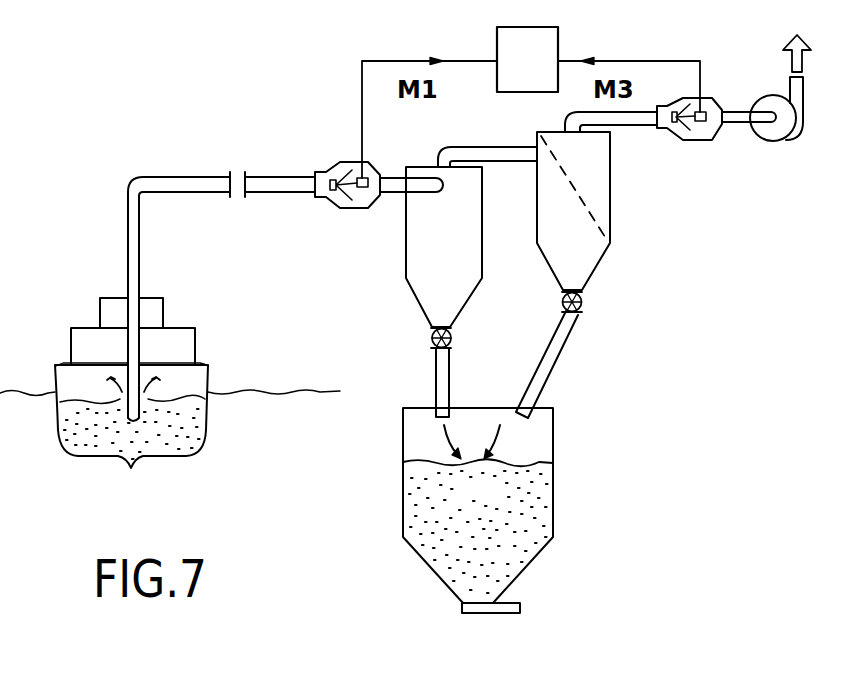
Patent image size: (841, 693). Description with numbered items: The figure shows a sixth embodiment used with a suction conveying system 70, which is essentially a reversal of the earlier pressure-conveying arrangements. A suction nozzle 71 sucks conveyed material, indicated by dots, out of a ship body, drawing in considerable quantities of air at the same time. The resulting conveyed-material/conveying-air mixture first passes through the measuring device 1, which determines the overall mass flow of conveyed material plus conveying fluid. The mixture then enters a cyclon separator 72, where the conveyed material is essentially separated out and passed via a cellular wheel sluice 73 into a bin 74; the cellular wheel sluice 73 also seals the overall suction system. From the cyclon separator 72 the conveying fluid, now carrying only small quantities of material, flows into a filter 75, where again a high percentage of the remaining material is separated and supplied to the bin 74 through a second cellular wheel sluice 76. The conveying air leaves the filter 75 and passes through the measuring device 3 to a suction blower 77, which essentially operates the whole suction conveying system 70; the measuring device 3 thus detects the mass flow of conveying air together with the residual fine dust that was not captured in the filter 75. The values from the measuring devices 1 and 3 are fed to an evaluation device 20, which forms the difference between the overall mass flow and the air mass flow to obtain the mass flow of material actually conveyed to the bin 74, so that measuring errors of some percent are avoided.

The measuring device 1 is at (339, 164).
The measuring device 3 is at (716, 98).
The evaluation device 20 is at (497, 43).
The suction conveying system 70 is at (212, 171).
The suction nozzle 71 is at (142, 402).
The cyclon separator 72 is at (406, 275).
The cellular wheel sluice 73 is at (432, 338).
The bin 74 is at (553, 420).
The filter 75 is at (603, 253).
The cellular wheel sluice 76 is at (581, 307).
The suction blower 77 is at (770, 135).